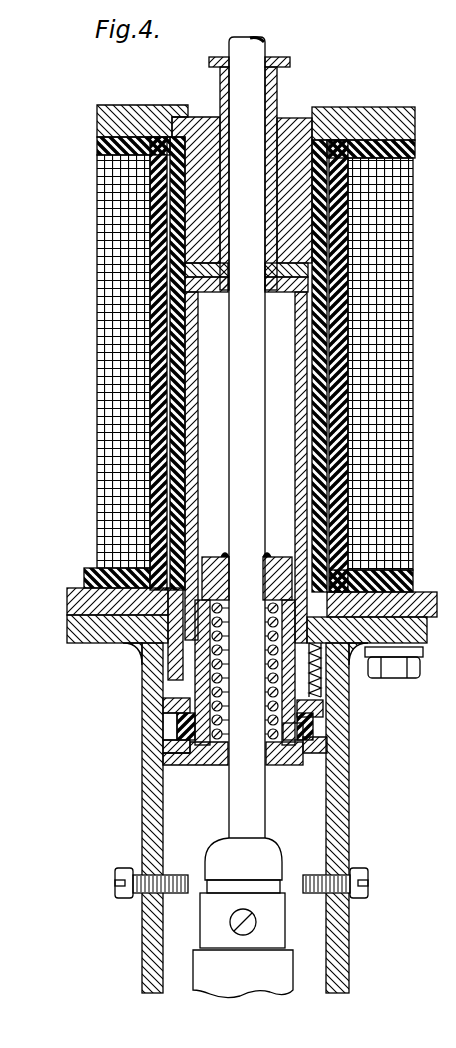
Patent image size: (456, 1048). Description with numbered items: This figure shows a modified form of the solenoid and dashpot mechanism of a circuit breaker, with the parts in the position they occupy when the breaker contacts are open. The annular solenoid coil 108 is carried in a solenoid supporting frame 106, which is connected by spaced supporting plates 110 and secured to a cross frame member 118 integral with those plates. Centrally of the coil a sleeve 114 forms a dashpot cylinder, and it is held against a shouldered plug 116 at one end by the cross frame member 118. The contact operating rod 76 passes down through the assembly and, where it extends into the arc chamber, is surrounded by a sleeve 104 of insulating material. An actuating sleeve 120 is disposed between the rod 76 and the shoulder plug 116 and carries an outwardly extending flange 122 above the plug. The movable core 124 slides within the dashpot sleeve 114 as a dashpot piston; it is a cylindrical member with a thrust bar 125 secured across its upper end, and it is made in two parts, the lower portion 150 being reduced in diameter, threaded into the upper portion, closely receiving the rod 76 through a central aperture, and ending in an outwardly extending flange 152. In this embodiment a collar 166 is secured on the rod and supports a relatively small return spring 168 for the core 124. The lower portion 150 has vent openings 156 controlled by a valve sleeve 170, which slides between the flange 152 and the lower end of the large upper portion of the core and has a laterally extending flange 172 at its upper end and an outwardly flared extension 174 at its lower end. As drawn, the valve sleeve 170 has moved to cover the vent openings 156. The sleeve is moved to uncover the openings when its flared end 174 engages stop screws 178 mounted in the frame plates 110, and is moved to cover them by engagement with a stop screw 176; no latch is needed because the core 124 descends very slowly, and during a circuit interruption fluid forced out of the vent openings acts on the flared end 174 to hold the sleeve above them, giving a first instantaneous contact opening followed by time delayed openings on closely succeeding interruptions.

The contact operating rod 76 is at (252, 400).
The sleeve of insulating material 104 is at (290, 990).
The solenoid supporting frame 106 is at (150, 112).
The solenoid coil 108 is at (108, 256).
The supporting plates 110 is at (145, 808).
The sleeve 114 is at (177, 315).
The shouldered plug 116 is at (210, 120).
The cross frame member 118 is at (68, 630).
The actuating sleeve 120 is at (278, 92).
The outwardly extending flange 122 is at (290, 62).
The movable core 124 is at (155, 432).
The thrust bar 125 is at (213, 290).
The lower portion of the core 150 is at (163, 692).
The outwardly extending flange 152 is at (165, 756).
The vent openings 156 is at (178, 729).
The collar 166 is at (277, 560).
The return spring 168 is at (183, 668).
The valve sleeve 170 is at (290, 733).
The laterally extending flange 172 is at (323, 708).
The outwardly flared extension 174 is at (320, 750).
The stop screw 176 is at (322, 690).
The stop screws 178 is at (120, 868).